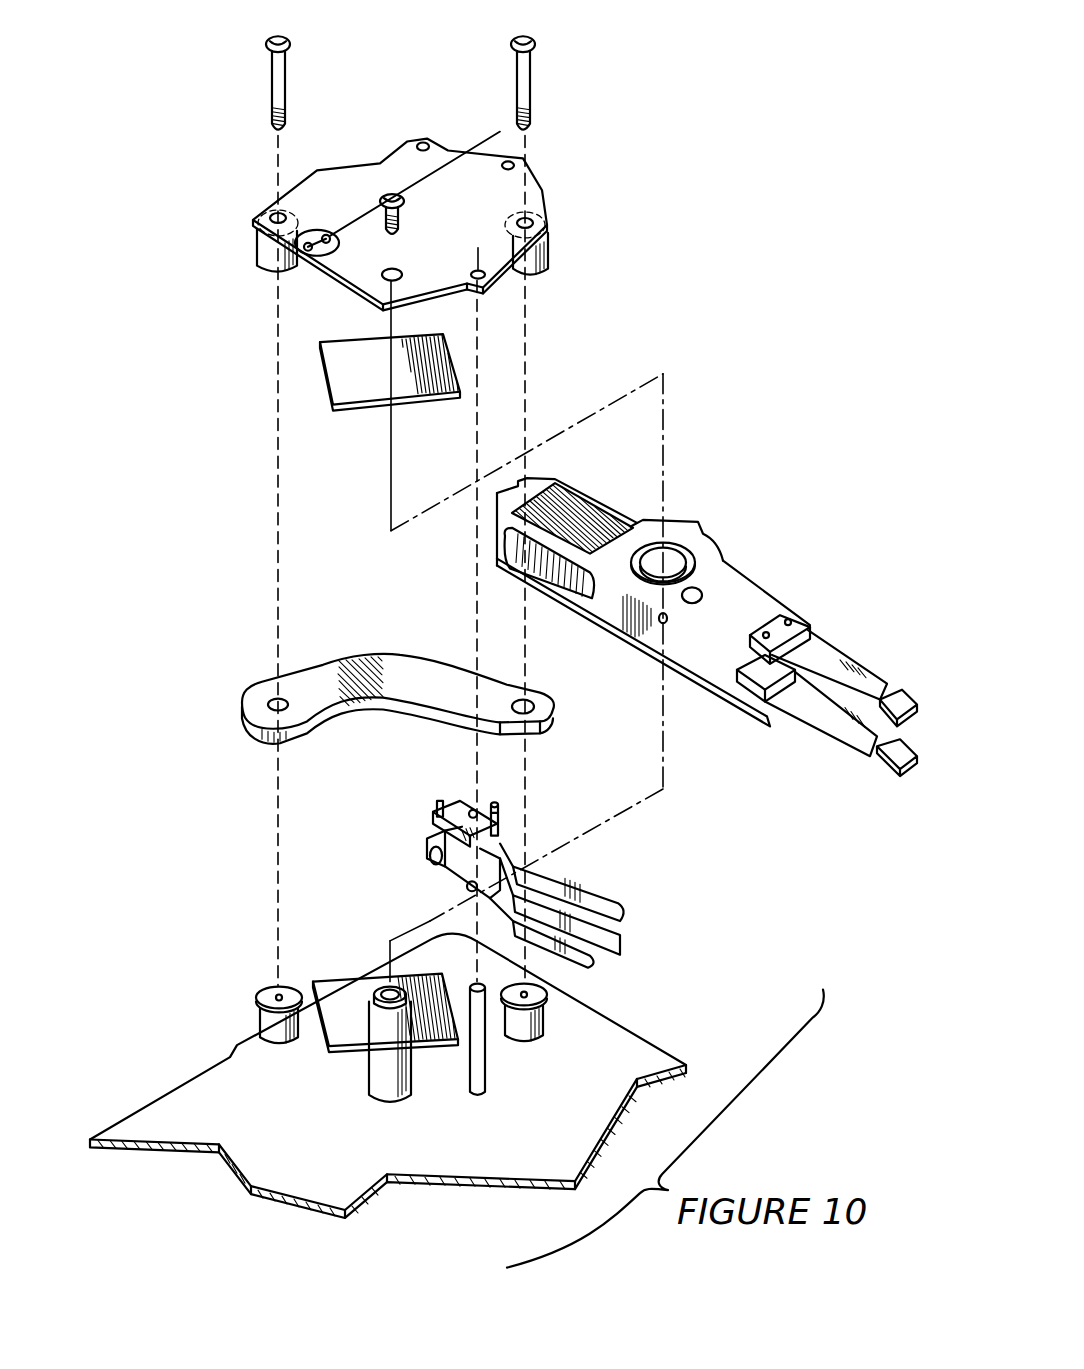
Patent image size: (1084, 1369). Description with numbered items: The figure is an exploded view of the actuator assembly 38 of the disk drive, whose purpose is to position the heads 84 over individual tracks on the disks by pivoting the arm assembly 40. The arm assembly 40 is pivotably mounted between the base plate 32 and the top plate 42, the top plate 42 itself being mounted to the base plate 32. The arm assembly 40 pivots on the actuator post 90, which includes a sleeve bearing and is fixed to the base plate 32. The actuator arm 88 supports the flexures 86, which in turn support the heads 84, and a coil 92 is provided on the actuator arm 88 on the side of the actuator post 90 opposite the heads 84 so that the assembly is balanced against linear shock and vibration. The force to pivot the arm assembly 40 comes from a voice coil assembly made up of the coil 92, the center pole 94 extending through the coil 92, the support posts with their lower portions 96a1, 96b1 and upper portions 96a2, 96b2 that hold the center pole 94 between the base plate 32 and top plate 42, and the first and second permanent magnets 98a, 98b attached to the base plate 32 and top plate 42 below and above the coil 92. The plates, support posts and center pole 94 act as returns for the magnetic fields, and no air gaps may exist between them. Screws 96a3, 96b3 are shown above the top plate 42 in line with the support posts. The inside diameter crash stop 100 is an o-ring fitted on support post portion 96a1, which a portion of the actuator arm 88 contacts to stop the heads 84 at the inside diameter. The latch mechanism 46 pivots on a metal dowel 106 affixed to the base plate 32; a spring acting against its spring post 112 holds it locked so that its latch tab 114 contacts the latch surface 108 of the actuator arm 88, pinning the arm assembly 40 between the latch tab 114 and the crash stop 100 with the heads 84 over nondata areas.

The base plate 32 is at (254, 1174).
The actuator assembly 38 is at (653, 357).
The arm assembly 40 is at (722, 627).
The top plate 42 is at (530, 188).
The latch mechanism 46 is at (620, 927).
The heads 84 is at (902, 720).
The flexures 86 is at (830, 658).
The actuator arm 88 is at (732, 590).
The actuator post 90 is at (404, 1079).
The coil 92 is at (575, 510).
The center pole 94 is at (553, 717).
The lower portion of support post 96a1 is at (268, 1031).
The upper portion of support post 96a2 is at (262, 247).
The screw 96a3 is at (280, 82).
The lower portion of support post 96b1 is at (530, 1026).
The upper portion of support post 96b2 is at (547, 247).
The screw 96b3 is at (527, 90).
The first permanent magnet 98a is at (341, 1028).
The second permanent magnet 98b is at (358, 392).
The inside diameter crash stop 100 is at (254, 1012).
The metal dowel 106 is at (480, 1068).
The latch surface 108 is at (722, 533).
The spring post 112 is at (505, 807).
The latch tab 114 is at (403, 183).